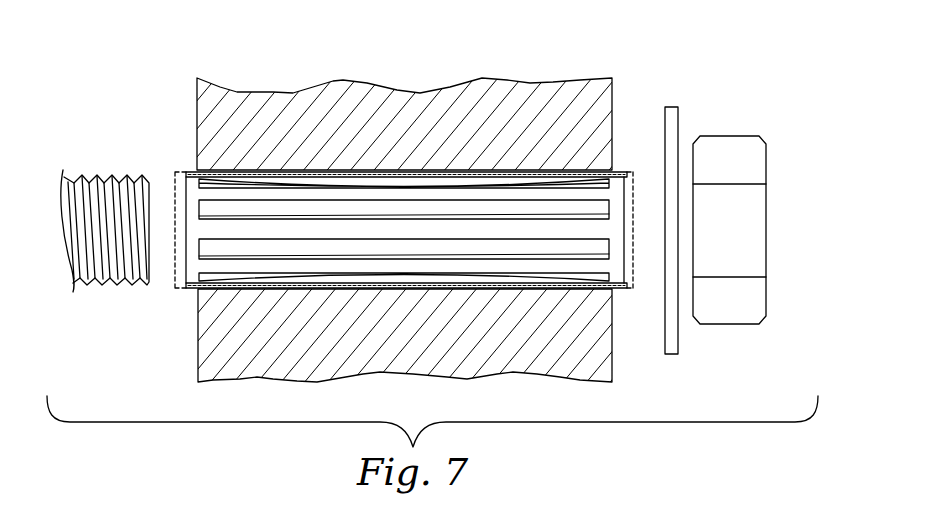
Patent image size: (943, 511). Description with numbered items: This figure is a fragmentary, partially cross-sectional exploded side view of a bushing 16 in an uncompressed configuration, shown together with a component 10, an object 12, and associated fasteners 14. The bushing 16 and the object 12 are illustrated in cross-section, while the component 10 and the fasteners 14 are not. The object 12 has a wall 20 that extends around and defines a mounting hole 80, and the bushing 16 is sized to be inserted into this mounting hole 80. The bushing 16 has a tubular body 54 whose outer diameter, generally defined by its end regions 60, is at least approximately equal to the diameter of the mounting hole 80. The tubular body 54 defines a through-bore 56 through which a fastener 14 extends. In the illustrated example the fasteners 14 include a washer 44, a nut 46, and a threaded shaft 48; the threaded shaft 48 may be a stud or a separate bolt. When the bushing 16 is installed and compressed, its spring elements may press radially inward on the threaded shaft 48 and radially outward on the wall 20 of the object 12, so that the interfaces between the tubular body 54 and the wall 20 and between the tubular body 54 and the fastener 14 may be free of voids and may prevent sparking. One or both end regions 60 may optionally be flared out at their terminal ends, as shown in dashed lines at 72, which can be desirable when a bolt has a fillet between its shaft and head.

The component 10 is at (71, 155).
The object 12 is at (192, 88).
The fasteners 14 is at (757, 91).
The bushing 16 is at (566, 164).
The wall 20 is at (196, 114).
The washer 44 is at (680, 112).
The nut 46 is at (742, 136).
The threaded shaft 48 is at (118, 176).
The tubular body 54 is at (566, 290).
The through-bore 56 is at (418, 278).
The end regions 60 is at (607, 228).
The flared terminal end 72 is at (175, 172).
The mounting hole 80 is at (313, 170).